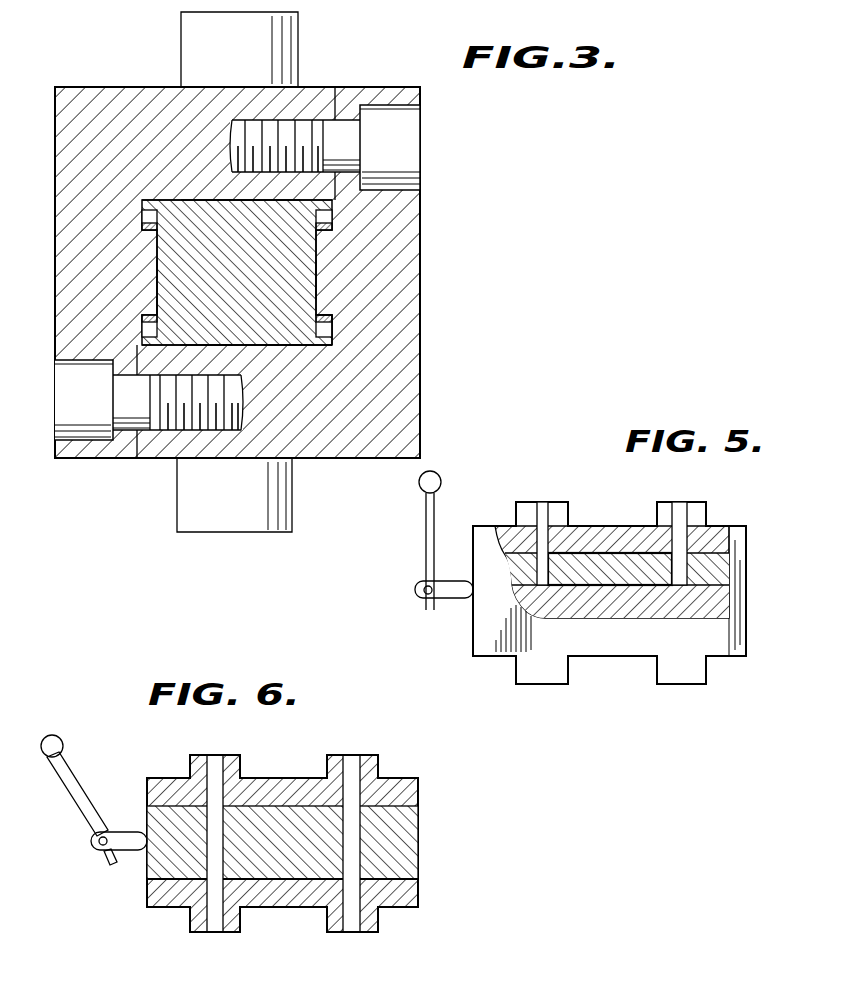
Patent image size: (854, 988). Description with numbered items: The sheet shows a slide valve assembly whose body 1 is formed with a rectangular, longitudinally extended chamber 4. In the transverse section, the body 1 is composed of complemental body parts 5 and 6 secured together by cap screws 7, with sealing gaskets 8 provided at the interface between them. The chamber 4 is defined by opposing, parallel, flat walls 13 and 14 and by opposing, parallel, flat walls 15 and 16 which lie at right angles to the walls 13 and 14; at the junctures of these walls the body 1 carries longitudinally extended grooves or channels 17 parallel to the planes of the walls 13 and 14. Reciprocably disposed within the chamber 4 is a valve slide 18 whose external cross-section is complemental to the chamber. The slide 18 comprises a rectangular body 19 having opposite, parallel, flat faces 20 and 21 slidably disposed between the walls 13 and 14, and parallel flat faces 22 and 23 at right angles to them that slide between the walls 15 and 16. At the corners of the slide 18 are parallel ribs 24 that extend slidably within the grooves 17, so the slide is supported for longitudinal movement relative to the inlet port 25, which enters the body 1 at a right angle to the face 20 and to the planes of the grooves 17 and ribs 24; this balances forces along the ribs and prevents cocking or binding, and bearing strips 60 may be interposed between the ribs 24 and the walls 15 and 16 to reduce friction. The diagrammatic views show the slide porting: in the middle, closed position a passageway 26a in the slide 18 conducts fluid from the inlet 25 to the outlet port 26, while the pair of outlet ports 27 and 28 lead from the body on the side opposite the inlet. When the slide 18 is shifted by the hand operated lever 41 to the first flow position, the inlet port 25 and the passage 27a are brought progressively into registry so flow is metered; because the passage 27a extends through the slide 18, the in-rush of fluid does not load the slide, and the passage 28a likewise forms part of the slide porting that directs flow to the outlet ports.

In FIG. 3, the body 1 is at (468, 186).
In FIG. 5, the body 1 is at (764, 564).
In FIG. 6, the body 1 is at (447, 790).
In FIG. 3, the chamber 4 is at (266, 204).
In FIG. 3, the body part 5 is at (400, 440).
In FIG. 3, the body part 6 is at (62, 127).
In FIG. 3, the cap screws 7 is at (400, 147).
In FIG. 3, the sealing gaskets 8 is at (336, 90).
In FIG. 3, the flat wall 13 is at (226, 206).
In FIG. 3, the flat wall 14 is at (231, 345).
In FIG. 3, the flat wall 15 is at (160, 290).
In FIG. 3, the flat wall 16 is at (315, 255).
In FIG. 3, the grooves or channels 17 is at (142, 213).
In FIG. 3, the valve slide 18 is at (322, 355).
In FIG. 5, the valve slide 18 is at (722, 600).
In FIG. 6, the valve slide 18 is at (392, 840).
In FIG. 3, the rectangular body 19 is at (285, 320).
In FIG. 3, the flat face 20 is at (217, 205).
In FIG. 3, the flat face 21 is at (204, 347).
In FIG. 3, the flat face 22 is at (157, 250).
In FIG. 3, the flat face 23 is at (318, 280).
In FIG. 3, the ribs 24 is at (150, 202).
In FIG. 5, the inlet port 25 is at (543, 512).
In FIG. 6, the inlet port 25 is at (218, 762).
In FIG. 5, the outlet port 26 is at (680, 512).
In FIG. 6, the outlet port 26 is at (356, 762).
In FIG. 5, the passageway 26a is at (588, 590).
In FIG. 6, the outlet port 27 is at (212, 933).
In FIG. 6, the passage 27a is at (222, 850).
In FIG. 6, the outlet port 28 is at (352, 933).
In FIG. 6, the passage 28a is at (357, 866).
In FIG. 5, the hand operated lever 41 is at (426, 533).
In FIG. 6, the hand operated lever 41 is at (70, 773).
In FIG. 3, the bearing strips 60 is at (140, 226).